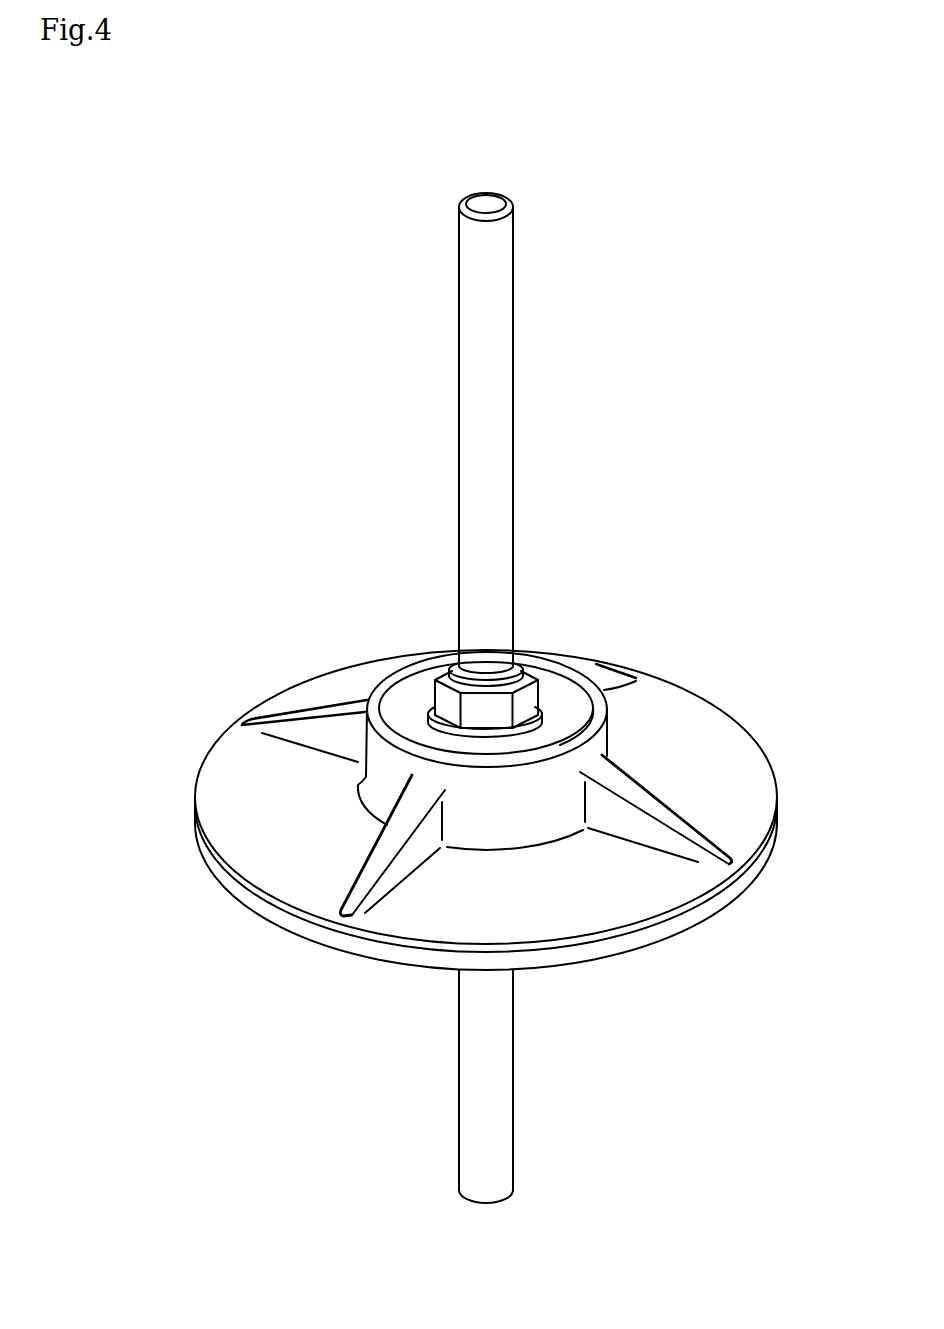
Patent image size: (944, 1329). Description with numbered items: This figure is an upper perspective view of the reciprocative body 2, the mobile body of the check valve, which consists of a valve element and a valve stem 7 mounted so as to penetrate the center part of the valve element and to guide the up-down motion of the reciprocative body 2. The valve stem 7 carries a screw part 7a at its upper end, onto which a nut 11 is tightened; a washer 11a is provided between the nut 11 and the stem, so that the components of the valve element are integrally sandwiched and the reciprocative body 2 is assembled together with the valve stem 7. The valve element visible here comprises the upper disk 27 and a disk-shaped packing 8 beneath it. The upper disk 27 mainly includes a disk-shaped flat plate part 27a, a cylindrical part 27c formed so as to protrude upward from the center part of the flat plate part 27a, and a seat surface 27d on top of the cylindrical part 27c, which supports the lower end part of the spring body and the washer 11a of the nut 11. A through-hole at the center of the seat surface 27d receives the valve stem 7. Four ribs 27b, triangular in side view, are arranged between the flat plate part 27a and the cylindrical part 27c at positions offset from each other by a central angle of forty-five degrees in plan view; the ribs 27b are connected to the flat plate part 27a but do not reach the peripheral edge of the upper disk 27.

The reciprocative body 2 is at (296, 284).
The valve stem 7 is at (514, 318).
The screw part 7a is at (515, 665).
The nut 11 is at (528, 693).
The washer 11a is at (583, 712).
The upper disk 27 is at (759, 705).
The flat plate part 27a is at (278, 865).
The ribs 27b is at (306, 712).
The cylindrical part 27c is at (378, 688).
The seat surface 27d is at (417, 697).
The packing 8 is at (737, 888).